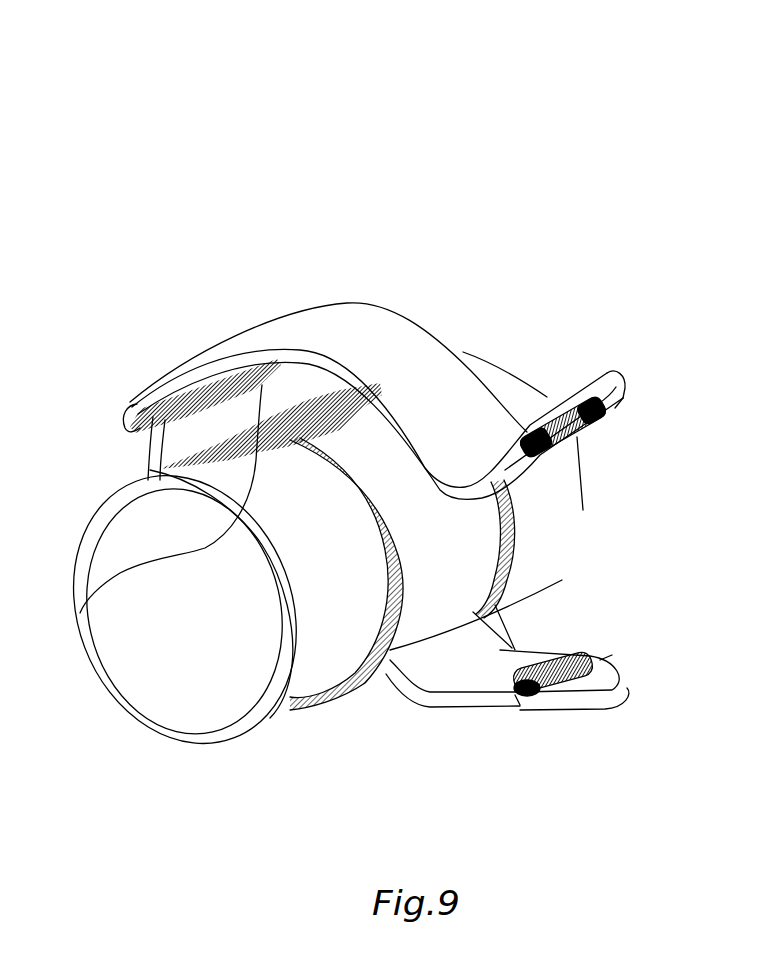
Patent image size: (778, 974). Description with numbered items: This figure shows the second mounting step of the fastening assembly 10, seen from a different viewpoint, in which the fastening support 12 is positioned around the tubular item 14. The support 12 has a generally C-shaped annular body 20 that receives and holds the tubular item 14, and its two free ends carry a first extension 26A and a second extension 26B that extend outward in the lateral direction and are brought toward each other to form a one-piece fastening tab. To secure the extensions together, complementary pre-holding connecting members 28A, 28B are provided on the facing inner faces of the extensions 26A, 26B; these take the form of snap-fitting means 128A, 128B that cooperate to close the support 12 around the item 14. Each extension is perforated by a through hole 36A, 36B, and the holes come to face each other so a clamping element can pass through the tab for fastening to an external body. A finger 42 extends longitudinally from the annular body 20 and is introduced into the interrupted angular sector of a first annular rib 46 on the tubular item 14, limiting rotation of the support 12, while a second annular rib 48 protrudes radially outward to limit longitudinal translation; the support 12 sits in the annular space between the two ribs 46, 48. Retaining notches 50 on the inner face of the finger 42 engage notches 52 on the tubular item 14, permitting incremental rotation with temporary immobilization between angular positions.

The fastening assembly 10 is at (518, 137).
The fastening support 12 is at (406, 356).
The tubular item 14 is at (259, 718).
The annular body 20 is at (333, 333).
The first extension 26A is at (578, 390).
The second extension 26B is at (589, 692).
The first snap-fitting means 28A is at (536, 428).
The second snap-fitting means 28B is at (529, 693).
The through hole 36A is at (622, 403).
The through hole 36B is at (615, 653).
The finger 42 is at (140, 407).
The first annular rib 46 is at (392, 663).
The second annular rib 48 is at (515, 540).
The retaining notches 50 is at (212, 387).
The notches 52 is at (80, 613).
The snap-fitting means 128A is at (573, 447).
The snap-fitting means 128B is at (515, 697).